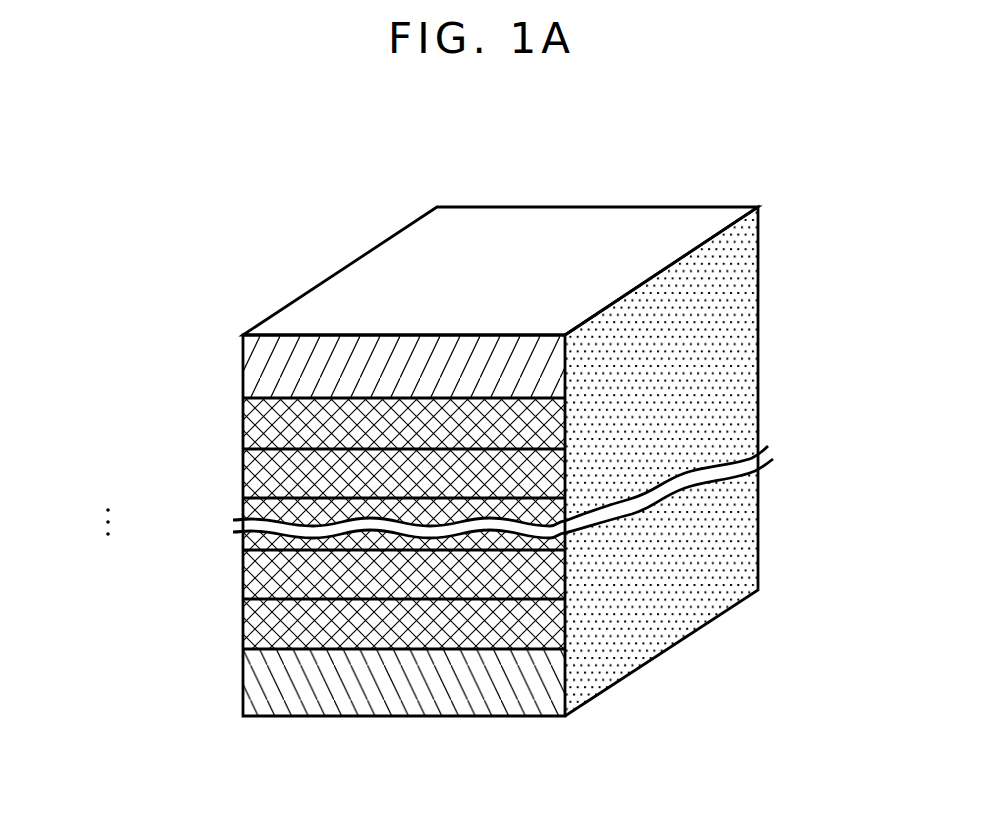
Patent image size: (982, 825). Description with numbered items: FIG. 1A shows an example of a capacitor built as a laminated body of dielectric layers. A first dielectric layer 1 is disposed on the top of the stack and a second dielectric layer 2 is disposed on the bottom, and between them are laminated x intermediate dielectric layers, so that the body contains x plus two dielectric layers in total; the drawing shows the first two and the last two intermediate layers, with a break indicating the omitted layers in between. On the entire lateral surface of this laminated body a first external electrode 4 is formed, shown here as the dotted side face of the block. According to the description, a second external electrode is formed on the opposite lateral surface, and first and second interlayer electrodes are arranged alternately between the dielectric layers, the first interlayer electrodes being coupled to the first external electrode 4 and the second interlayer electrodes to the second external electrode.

The first dielectric layer 1 is at (277, 373).
The second dielectric layer 2 is at (277, 690).
The first external electrode 4 is at (725, 330).